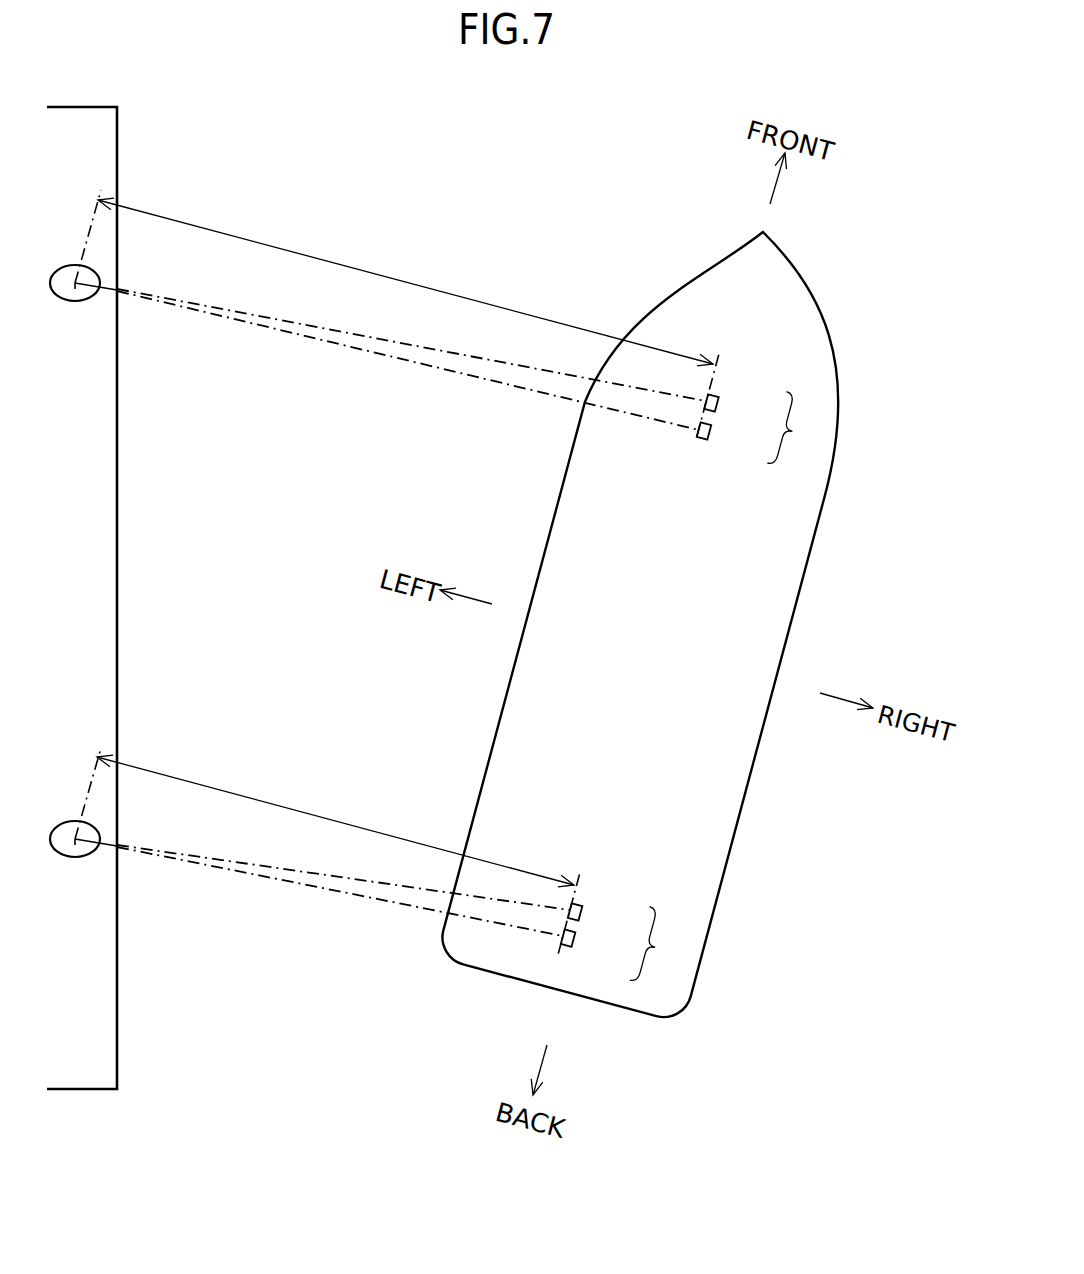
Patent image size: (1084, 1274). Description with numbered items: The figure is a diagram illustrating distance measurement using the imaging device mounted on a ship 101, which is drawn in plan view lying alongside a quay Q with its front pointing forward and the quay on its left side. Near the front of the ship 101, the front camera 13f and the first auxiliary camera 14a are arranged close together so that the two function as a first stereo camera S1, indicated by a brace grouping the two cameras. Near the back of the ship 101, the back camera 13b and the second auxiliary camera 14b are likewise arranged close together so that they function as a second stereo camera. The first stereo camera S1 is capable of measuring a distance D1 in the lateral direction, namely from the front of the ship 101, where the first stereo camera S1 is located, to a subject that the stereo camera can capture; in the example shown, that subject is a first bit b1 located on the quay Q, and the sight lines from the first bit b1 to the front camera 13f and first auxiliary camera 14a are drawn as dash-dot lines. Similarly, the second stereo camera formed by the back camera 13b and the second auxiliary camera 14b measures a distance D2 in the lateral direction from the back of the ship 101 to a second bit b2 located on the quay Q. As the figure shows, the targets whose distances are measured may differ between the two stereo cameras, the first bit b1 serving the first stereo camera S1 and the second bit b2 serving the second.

The quay Q is at (100, 131).
The first bit b1 is at (75, 301).
The second bit b2 is at (75, 857).
The ship 101 is at (800, 264).
The front camera 13f is at (718, 402).
The first auxiliary camera 14a is at (711, 432).
The second auxiliary camera 14b is at (581, 913).
The back camera 13b is at (575, 942).
The first stereo camera S1 is at (730, 688).
The distance D1 is at (397, 315).
The distance D2 is at (327, 851).